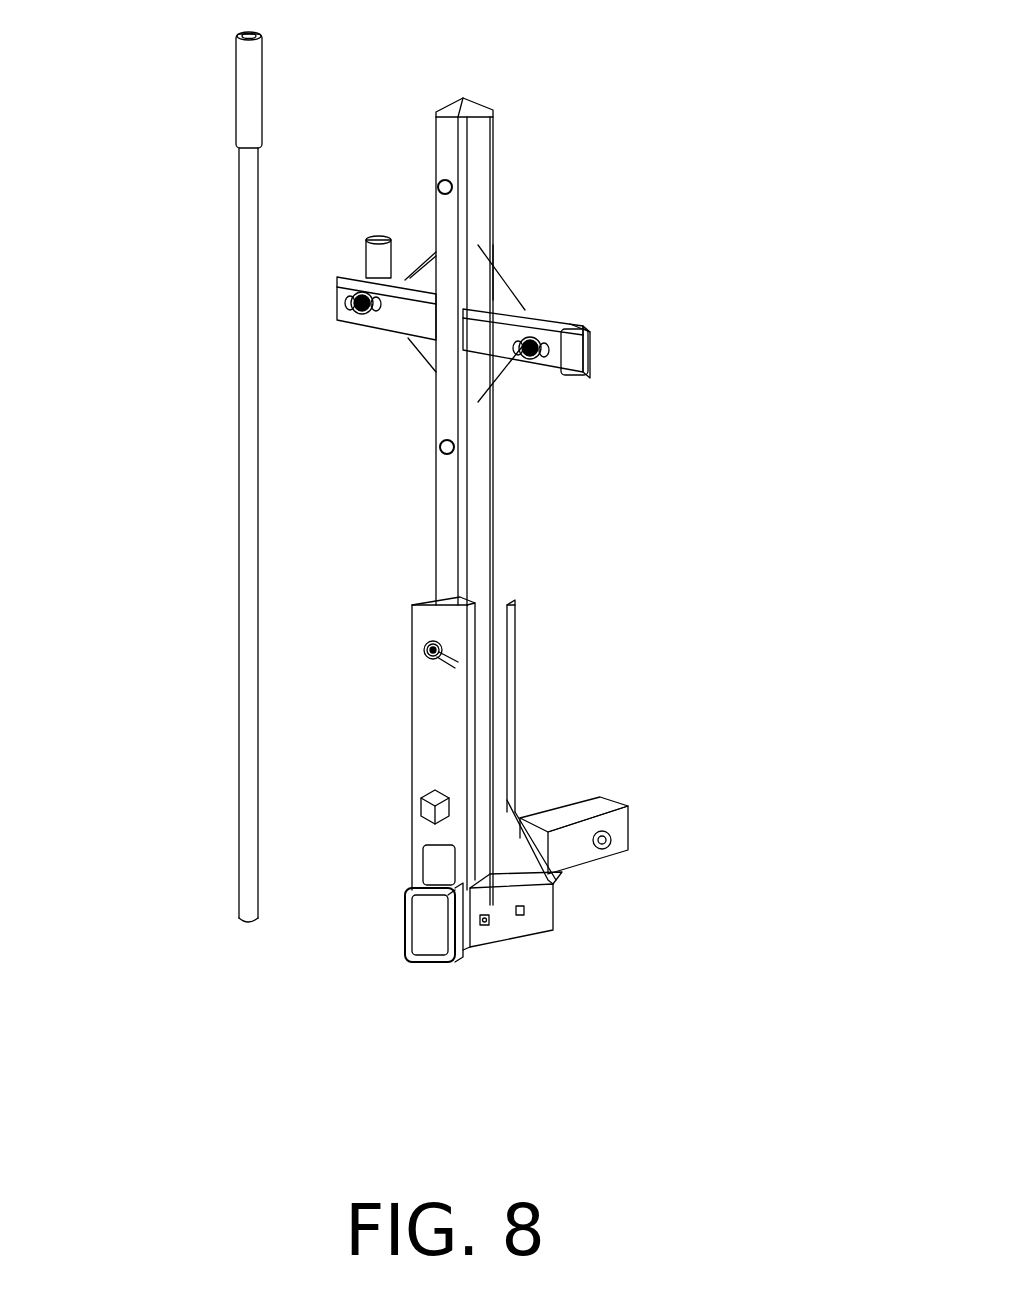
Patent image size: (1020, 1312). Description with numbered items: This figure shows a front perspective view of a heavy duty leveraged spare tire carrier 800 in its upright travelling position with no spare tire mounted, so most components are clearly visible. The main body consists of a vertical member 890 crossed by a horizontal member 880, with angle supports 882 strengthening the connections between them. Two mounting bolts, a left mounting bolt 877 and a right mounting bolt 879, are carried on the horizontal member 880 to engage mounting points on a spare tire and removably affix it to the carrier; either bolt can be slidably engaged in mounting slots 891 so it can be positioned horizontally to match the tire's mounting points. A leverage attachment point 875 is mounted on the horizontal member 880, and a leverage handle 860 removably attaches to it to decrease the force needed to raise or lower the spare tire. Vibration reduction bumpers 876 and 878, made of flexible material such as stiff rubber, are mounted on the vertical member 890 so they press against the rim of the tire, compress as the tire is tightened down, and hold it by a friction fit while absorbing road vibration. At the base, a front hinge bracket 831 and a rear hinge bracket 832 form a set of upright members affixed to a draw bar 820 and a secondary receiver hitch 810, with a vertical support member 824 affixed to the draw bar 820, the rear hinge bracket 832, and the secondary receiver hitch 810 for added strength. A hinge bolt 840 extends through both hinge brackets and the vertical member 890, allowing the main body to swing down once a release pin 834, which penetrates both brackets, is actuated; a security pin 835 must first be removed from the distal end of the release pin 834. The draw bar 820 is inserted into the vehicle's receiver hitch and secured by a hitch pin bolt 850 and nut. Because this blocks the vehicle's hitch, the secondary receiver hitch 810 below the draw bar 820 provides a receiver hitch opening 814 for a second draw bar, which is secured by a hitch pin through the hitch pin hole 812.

The heavy duty leveraged spare tire carrier 800 is at (236, 1140).
The secondary receiver hitch 810 is at (530, 912).
The hitch pin hole 812 is at (486, 926).
The receiver hitch opening 814 is at (378, 922).
The draw bar 820 is at (602, 800).
The vertical support member 824 is at (527, 868).
The front hinge bracket 831 is at (421, 755).
The rear hinge bracket 832 is at (518, 770).
The release pin 834 is at (433, 662).
The security pin 835 is at (425, 650).
The hinge bolt 840 is at (430, 820).
The hitch pin bolt 850 is at (605, 848).
The leverage handle 860 is at (243, 286).
The leverage attachment point 875 is at (378, 236).
The vibration reduction bumper 876 is at (443, 180).
The left mounting bolt 877 is at (366, 316).
The vibration reduction bumper 878 is at (441, 456).
The right mounting bolt 879 is at (540, 346).
The horizontal member 880 is at (543, 320).
The angle supports 882 is at (420, 277).
The vertical member 890 is at (483, 137).
The mounting slots 891 is at (377, 318).